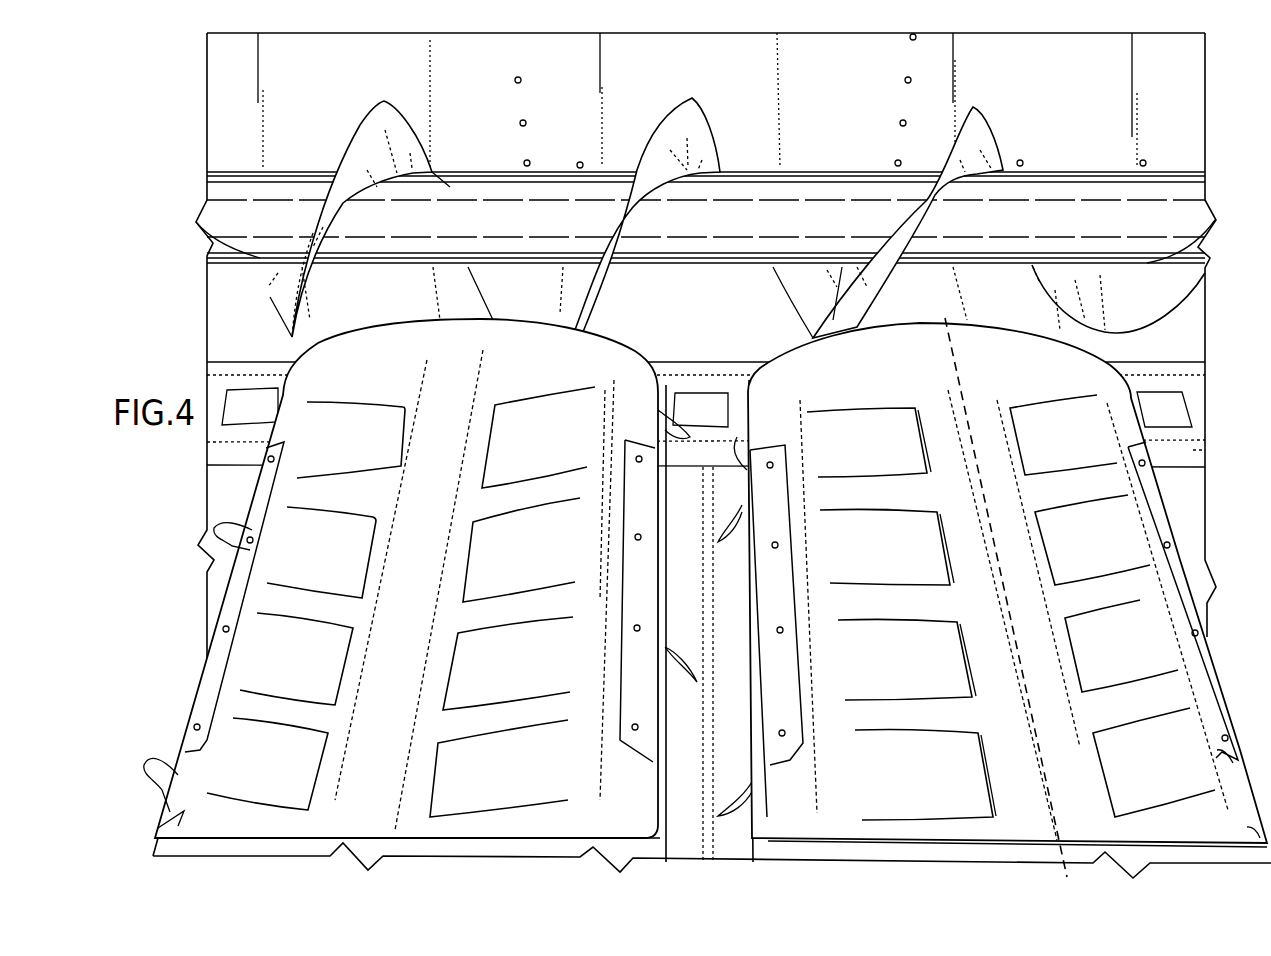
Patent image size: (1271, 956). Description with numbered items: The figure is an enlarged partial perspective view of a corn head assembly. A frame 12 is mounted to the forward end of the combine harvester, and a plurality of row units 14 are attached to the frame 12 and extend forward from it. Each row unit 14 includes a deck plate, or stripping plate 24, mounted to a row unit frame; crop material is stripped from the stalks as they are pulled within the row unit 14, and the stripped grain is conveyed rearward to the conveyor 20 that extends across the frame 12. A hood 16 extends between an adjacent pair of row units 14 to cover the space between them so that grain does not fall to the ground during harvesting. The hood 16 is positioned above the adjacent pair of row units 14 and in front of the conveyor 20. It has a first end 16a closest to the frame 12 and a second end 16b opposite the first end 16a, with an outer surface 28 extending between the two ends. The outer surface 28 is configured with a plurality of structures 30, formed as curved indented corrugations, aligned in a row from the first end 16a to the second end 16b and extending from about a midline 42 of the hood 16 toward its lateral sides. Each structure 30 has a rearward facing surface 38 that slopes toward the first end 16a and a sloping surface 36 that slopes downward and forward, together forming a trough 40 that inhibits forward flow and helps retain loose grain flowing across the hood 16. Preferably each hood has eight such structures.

The frame 12 is at (498, 33).
The row unit 14 is at (700, 383).
The hood 16 is at (403, 353).
The first end 16a is at (282, 378).
The second end 16b is at (152, 801).
The conveyor 20 is at (452, 190).
The deck plate 24 is at (722, 670).
The outer surface 28 is at (420, 800).
The structures 30 is at (367, 473).
The sloping surface 36 is at (922, 547).
The rearward facing surface 38 is at (937, 612).
The trough 40 is at (925, 585).
The midline 42 is at (947, 330).